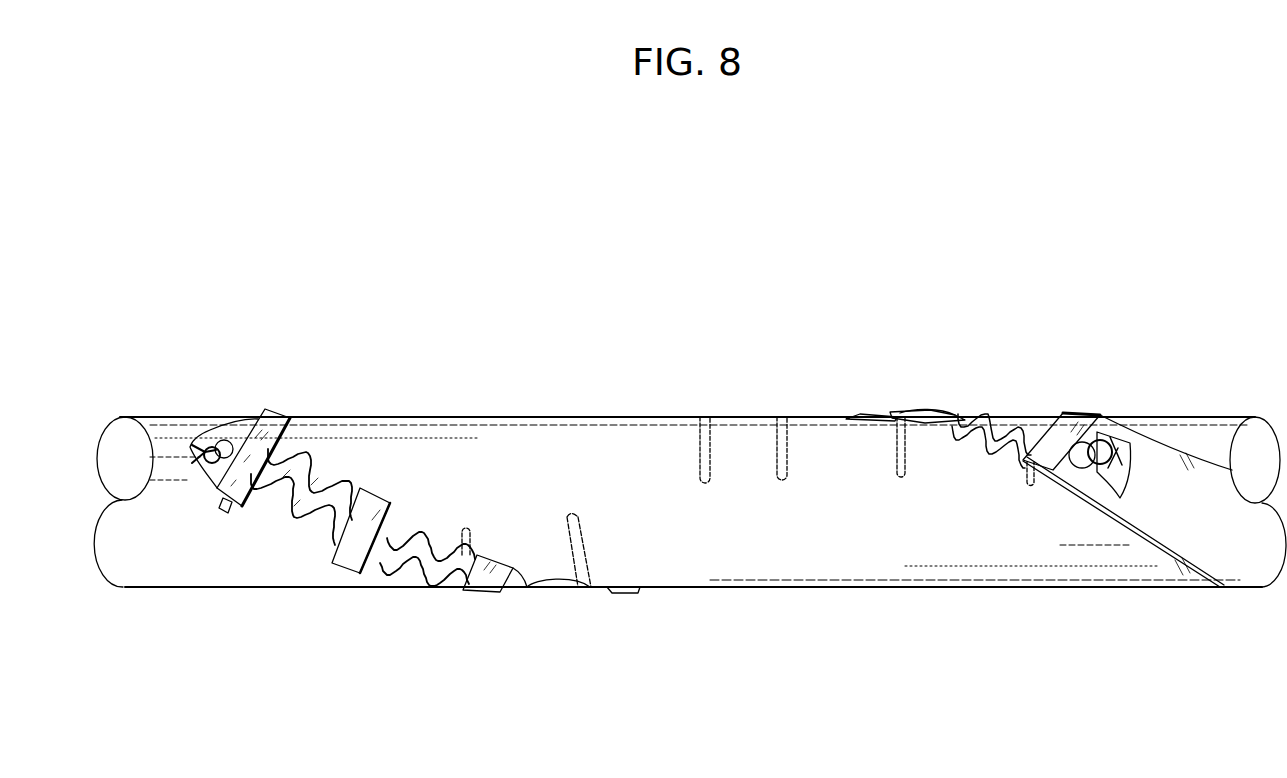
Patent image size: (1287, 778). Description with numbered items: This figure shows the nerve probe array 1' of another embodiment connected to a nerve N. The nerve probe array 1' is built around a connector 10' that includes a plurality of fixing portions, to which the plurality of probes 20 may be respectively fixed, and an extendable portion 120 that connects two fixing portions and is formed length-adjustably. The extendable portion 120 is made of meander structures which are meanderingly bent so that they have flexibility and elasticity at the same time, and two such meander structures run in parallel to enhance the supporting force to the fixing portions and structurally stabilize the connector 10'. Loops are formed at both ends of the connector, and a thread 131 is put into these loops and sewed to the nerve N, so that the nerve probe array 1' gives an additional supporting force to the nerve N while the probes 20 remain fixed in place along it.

The nerve probe array 1' is at (690, 573).
The connector 10' is at (486, 608).
The probes 20 is at (466, 527).
The extendable portion 120 is at (325, 458).
The thread 131 is at (190, 448).
The nerve N is at (568, 443).